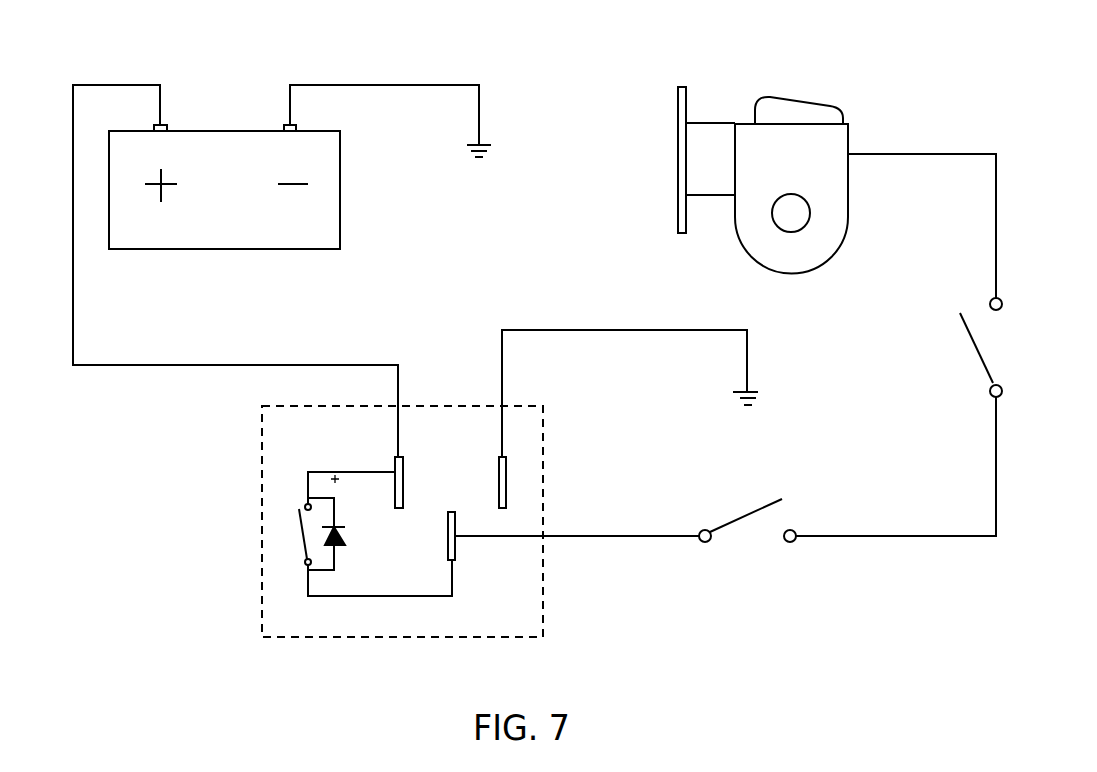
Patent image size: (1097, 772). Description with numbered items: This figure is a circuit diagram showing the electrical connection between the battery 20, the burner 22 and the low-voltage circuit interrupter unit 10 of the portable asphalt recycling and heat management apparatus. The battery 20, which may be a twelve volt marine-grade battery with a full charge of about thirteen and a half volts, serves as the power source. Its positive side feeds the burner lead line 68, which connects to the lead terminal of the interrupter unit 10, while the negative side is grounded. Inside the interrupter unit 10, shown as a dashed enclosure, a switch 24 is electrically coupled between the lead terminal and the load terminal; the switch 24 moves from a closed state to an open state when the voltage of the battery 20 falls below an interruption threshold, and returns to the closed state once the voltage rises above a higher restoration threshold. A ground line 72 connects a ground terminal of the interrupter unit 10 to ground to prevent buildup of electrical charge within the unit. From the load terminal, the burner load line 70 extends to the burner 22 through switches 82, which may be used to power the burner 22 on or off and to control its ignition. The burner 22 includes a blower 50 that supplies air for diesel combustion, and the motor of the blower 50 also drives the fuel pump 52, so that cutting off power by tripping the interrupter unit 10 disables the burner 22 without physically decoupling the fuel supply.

The low-voltage circuit interrupter unit 10 is at (377, 559).
The battery 20 is at (231, 142).
The burner 22 is at (837, 169).
The switch 24 is at (290, 532).
The blower 50 is at (802, 222).
The fuel pump 52 is at (785, 110).
The burner lead line 68 is at (207, 363).
The burner load line 70 is at (570, 538).
The ground line 72 is at (610, 328).
The switches 82 is at (757, 548).